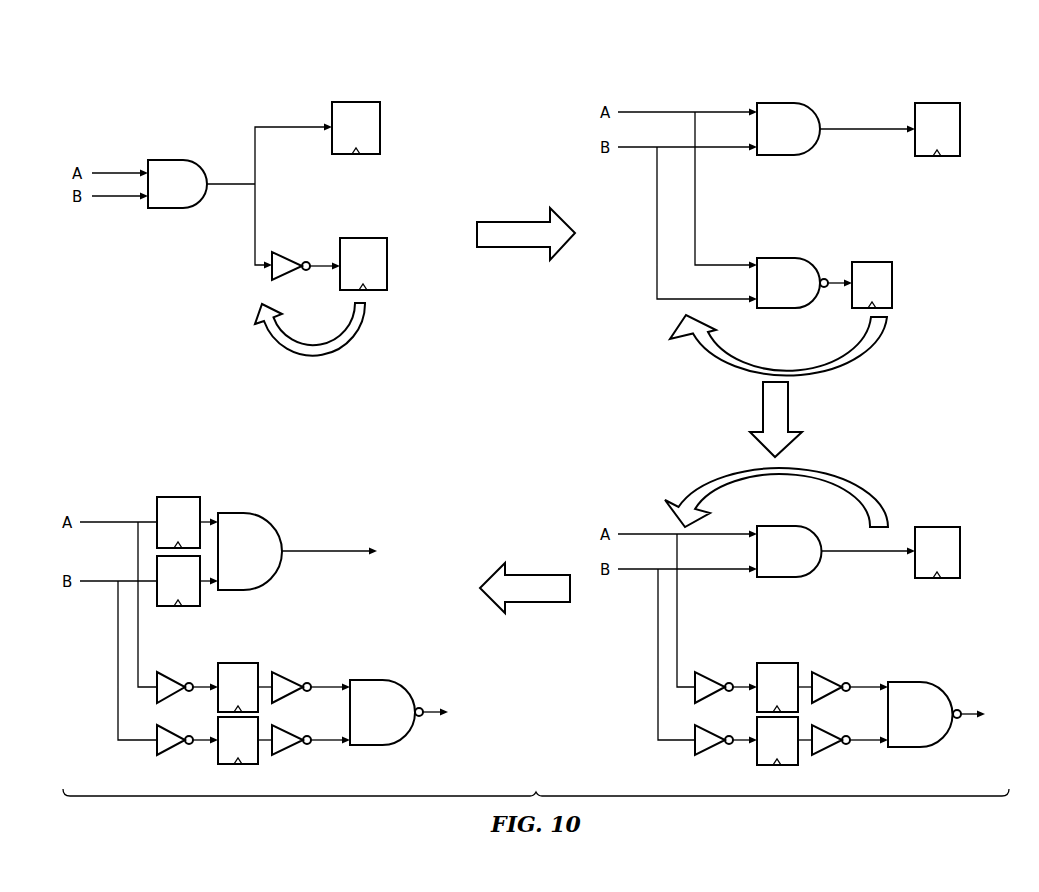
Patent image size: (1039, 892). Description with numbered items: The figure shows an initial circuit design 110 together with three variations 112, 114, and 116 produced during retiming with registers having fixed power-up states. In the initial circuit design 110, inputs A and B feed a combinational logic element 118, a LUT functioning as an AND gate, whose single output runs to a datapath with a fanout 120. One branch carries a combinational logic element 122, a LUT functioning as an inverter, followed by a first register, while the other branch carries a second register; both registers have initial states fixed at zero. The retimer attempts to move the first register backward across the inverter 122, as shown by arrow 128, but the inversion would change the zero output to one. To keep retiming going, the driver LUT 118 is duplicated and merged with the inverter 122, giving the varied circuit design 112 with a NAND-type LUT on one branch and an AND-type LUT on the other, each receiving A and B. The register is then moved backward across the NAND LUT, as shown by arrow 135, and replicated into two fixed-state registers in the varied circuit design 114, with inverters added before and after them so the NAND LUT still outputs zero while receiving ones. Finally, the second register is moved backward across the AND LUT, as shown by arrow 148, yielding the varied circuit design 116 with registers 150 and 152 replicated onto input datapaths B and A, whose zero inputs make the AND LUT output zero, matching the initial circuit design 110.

The initial circuit design 110 is at (118, 85).
The varied circuit design 112 is at (678, 84).
The varied circuit design 114 is at (614, 480).
The varied circuit design 116 is at (117, 477).
The combinational logic element 118 is at (180, 160).
The fanout 120 is at (267, 196).
The combinational logic element 122 is at (282, 252).
The arrow 128 is at (262, 333).
The arrow 135 is at (706, 362).
The arrow 148 is at (862, 485).
The register 150 is at (180, 607).
The register 152 is at (182, 497).